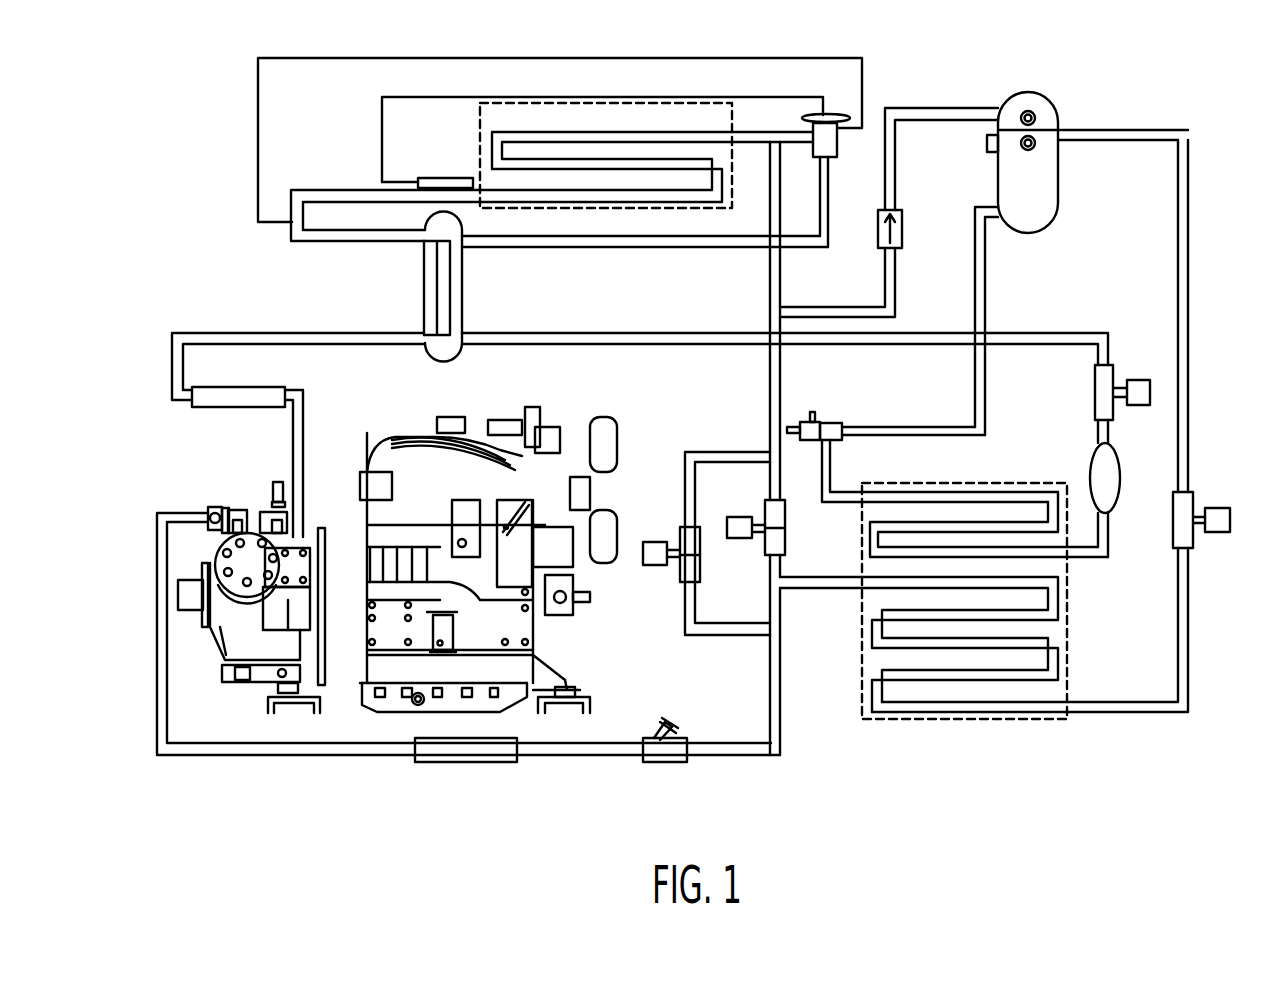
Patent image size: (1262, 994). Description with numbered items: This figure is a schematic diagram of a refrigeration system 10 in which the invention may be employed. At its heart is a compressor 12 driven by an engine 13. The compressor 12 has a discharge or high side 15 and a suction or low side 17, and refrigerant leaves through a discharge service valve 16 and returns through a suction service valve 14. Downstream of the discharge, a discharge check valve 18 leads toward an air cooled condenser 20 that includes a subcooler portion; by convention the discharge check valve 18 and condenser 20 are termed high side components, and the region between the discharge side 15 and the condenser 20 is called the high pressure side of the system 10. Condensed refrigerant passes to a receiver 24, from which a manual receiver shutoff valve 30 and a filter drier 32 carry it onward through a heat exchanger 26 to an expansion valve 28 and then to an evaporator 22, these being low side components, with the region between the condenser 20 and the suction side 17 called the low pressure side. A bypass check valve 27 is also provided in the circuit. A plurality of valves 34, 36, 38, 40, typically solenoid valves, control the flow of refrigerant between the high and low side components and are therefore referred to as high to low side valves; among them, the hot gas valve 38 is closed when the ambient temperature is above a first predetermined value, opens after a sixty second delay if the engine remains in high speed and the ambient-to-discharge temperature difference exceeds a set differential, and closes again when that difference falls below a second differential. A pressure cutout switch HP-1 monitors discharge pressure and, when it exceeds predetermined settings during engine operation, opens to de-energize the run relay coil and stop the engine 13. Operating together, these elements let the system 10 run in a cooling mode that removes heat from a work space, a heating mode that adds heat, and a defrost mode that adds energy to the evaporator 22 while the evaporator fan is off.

The refrigeration system 10 is at (1129, 721).
The compressor 12 is at (326, 676).
The engine 13 is at (556, 641).
The suction service valve 14 is at (303, 555).
The discharge side 15 is at (308, 502).
The discharge service valve 16 is at (220, 508).
The suction side 17 is at (183, 508).
The discharge check valve 18 is at (661, 752).
The air cooled condenser 20 is at (960, 722).
The evaporator 22 is at (623, 101).
The receiver 24 is at (1060, 180).
The heat exchanger 26 is at (462, 300).
The bypass check valve 27 is at (902, 231).
The expansion valve 28 is at (811, 118).
The manual receiver shutoff valve 30 is at (816, 412).
The filter drier 32 is at (1097, 462).
The valve 34 is at (1220, 514).
The valve 36 is at (1095, 391).
The hot gas valve 38 is at (740, 517).
The valve 40 is at (700, 570).
The pressure cutout switch HP-1 is at (274, 482).